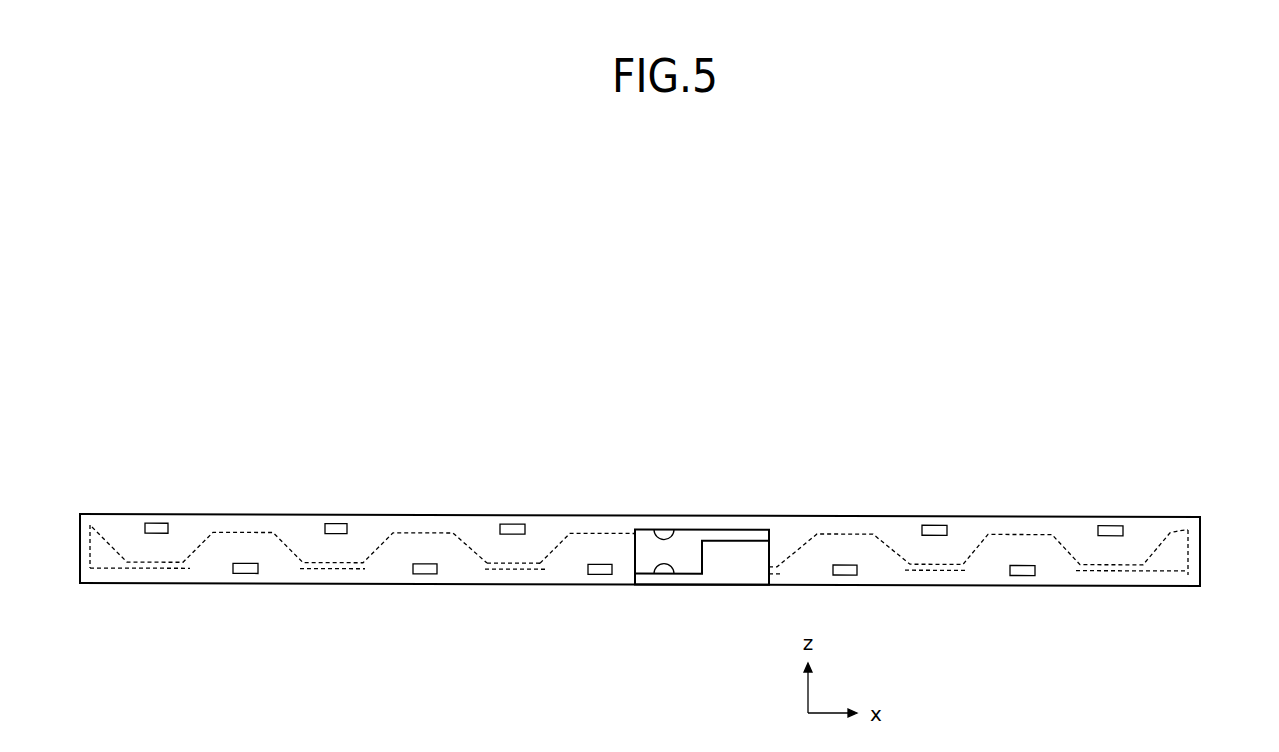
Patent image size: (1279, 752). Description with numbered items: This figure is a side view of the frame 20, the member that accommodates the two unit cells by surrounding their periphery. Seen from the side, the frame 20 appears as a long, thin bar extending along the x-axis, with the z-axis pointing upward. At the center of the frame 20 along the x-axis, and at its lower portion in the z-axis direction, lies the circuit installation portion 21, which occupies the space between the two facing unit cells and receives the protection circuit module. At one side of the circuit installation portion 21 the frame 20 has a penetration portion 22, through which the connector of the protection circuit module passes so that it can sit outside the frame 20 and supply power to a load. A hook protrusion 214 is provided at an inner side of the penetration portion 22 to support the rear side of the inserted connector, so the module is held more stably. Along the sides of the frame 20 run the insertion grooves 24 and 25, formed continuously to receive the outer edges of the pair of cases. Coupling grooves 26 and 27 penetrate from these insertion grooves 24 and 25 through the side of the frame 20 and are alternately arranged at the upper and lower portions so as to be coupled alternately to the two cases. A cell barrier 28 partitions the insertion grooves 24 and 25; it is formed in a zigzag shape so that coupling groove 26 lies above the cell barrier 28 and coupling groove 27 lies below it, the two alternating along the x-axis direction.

The frame 20 is at (1200, 551).
The circuit installation portion 21 is at (670, 573).
The penetration portion 22 is at (675, 528).
The hook protrusion 214 is at (735, 557).
The insertion groove 24 is at (1150, 547).
The insertion groove 25 is at (1182, 577).
The coupling groove 26 is at (336, 523).
The coupling groove 27 is at (420, 574).
The cell barrier 28 is at (512, 566).